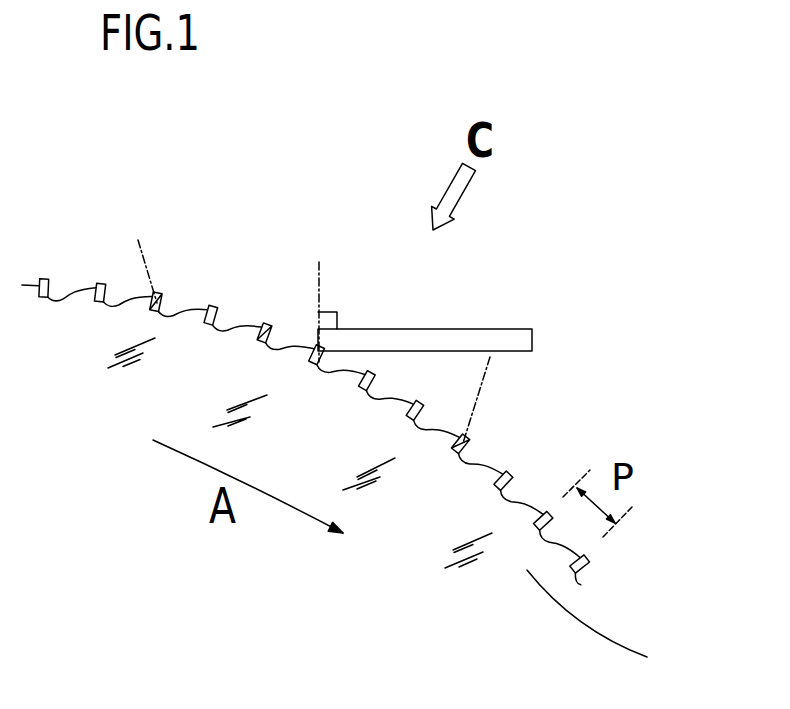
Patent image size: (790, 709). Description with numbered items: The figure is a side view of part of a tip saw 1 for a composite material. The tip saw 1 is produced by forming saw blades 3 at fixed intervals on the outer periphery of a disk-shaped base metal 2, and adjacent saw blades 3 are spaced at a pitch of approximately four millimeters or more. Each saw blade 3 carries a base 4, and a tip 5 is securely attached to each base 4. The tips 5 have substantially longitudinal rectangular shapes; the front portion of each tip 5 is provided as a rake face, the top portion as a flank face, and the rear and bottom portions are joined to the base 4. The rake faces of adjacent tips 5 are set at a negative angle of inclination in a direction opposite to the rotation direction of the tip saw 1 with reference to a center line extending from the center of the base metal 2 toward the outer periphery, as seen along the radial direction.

The tip saw 1 is at (212, 300).
The base metal 2 is at (600, 627).
The saw blade 3 is at (83, 307).
The base 4 is at (160, 300).
The tip 5 is at (266, 326).